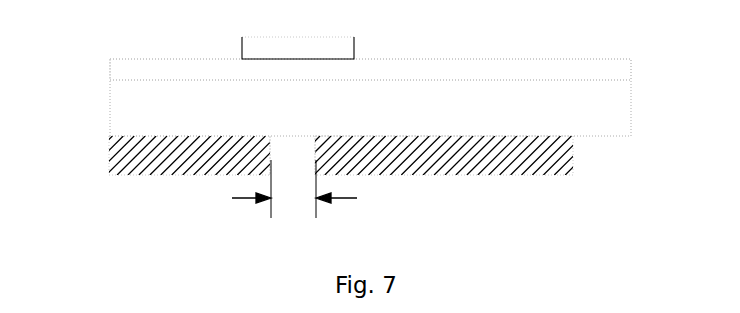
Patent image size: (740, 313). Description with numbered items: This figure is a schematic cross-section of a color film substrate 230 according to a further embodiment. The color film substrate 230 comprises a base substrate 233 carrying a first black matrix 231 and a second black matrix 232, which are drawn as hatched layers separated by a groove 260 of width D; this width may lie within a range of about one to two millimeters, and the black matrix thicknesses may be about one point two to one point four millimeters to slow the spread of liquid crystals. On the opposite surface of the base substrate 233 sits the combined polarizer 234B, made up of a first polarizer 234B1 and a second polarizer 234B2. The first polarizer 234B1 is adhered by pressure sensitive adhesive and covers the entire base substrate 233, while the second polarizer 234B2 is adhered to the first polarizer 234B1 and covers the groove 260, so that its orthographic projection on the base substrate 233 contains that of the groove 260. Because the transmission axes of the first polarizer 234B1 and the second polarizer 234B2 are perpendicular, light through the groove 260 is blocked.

The color film substrate 230 is at (91, 70).
The first black matrix 231 is at (573, 168).
The second black matrix 232 is at (135, 165).
The base substrate 233 is at (623, 120).
The combined polarizer 234B is at (452, 52).
The first polarizer 234B1 is at (354, 40).
The second polarizer 234B2 is at (602, 62).
The groove 260 is at (285, 151).